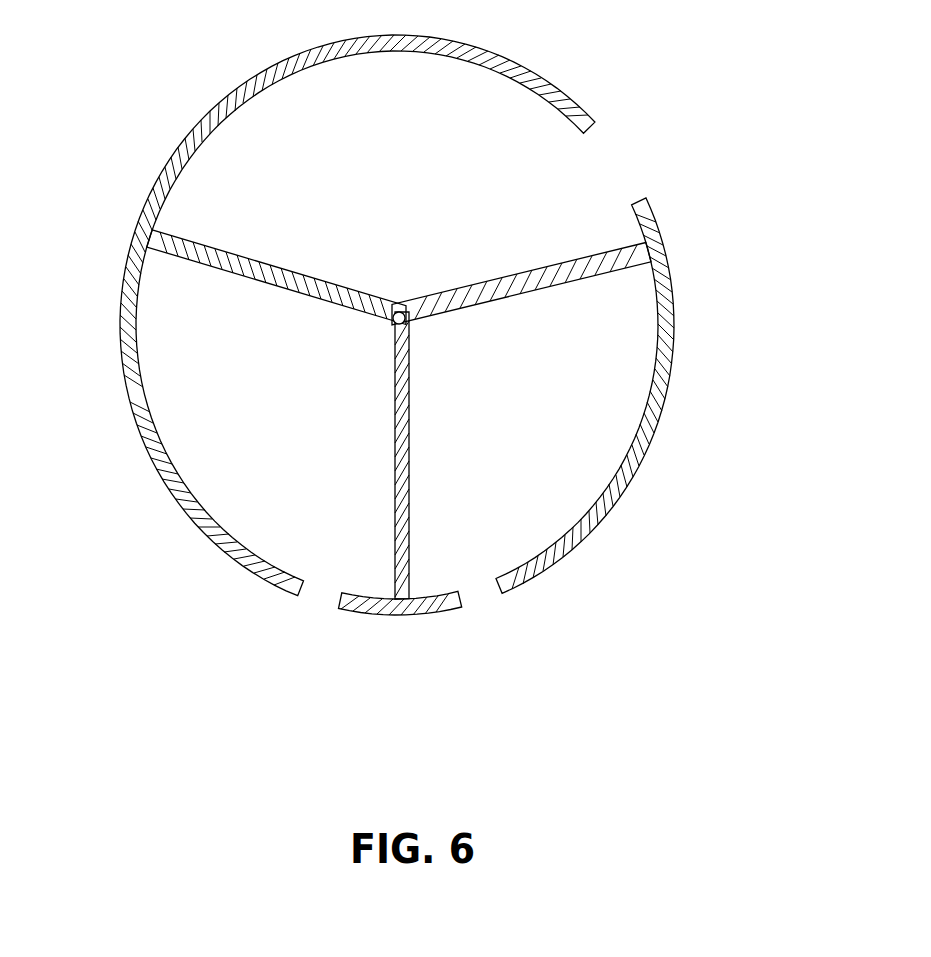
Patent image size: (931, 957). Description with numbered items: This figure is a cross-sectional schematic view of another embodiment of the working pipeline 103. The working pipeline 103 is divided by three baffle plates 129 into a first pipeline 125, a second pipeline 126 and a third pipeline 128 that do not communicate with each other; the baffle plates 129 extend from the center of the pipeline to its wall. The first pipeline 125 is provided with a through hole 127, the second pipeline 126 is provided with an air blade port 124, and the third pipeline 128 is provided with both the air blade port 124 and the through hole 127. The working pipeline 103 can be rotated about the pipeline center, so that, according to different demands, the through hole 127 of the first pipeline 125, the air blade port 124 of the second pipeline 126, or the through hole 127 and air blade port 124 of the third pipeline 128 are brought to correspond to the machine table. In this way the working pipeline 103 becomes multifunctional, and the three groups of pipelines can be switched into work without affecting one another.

The working pipeline 103 is at (413, 394).
The air blade port 124 is at (608, 162).
The first pipeline 125 is at (615, 327).
The second pipeline 126 is at (183, 433).
The through hole 127 is at (307, 603).
The third pipeline 128 is at (240, 162).
The baffle plate 129 is at (173, 253).